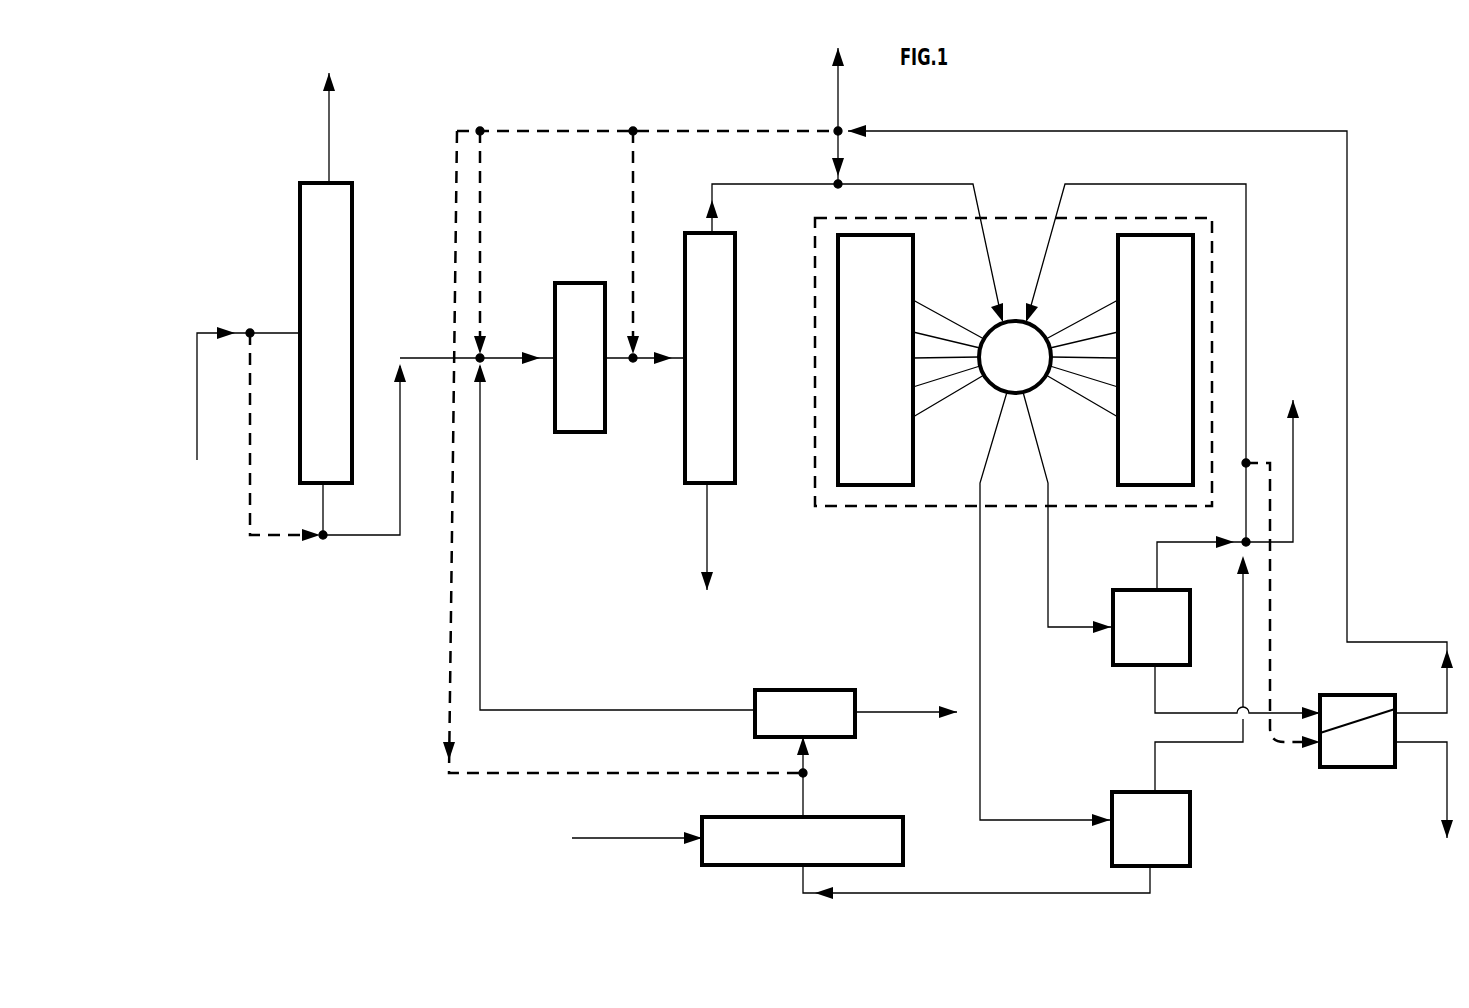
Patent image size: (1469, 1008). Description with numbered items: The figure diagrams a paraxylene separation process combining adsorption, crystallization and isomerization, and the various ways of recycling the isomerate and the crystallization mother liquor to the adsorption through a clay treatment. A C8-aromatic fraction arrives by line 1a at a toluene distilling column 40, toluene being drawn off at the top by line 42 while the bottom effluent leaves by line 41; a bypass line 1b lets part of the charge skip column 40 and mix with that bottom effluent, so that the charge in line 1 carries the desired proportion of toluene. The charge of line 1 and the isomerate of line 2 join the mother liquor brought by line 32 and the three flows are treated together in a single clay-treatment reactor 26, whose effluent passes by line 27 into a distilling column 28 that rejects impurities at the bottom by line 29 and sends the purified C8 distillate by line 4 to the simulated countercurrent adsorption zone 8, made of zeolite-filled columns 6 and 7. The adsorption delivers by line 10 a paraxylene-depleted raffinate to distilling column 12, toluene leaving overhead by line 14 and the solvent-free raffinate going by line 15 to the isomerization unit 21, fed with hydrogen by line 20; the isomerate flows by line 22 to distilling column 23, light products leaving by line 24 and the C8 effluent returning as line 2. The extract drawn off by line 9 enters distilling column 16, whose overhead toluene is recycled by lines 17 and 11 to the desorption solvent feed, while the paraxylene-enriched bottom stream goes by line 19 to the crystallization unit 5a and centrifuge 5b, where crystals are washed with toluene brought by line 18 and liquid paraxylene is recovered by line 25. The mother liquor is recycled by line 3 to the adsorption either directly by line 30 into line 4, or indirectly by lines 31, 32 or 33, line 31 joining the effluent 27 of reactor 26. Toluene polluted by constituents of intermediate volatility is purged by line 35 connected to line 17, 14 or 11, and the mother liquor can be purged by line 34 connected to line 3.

The charge line 1 is at (410, 358).
The C8-aromatic fraction source line 1a is at (200, 333).
The charge bypass line 1b is at (250, 486).
The isomerate recycle line 2 is at (480, 392).
The mother liquor recycle line 3 is at (1349, 350).
The adsorption feed line 4 is at (755, 185).
The crystallization unit 5a is at (1330, 704).
The centrifuge 5b is at (1340, 752).
The adsorption column 6 is at (886, 373).
The adsorption column 7 is at (1166, 373).
The simulated countercurrent adsorption zone 8 is at (1028, 258).
The extract line 9 is at (1048, 558).
The raffinate line 10 is at (980, 558).
The desorption solvent recycle line 11 is at (1246, 325).
The raffinate distilling column 12 is at (1165, 843).
The toluene overhead line 14 is at (1155, 752).
The solvent-free raffinate line 15 is at (965, 893).
The extract distilling column 16 is at (1163, 642).
The toluene recycle line 17 is at (1157, 552).
The washing solvent line 18 is at (1268, 746).
The paraxylene-enriched stream line 19 is at (1155, 700).
The hydrogen line 20 is at (602, 838).
The isomerization unit 21 is at (811, 855).
The isomerate line 22 is at (806, 792).
The isomerate distilling column 23 is at (819, 730).
The light overhead line 24 is at (900, 714).
The paraxylene product line 25 is at (1447, 828).
The clay-treatment reactor 26 is at (592, 372).
The clay-treatment effluent line 27 is at (633, 366).
The purification distilling column 28 is at (720, 372).
The impurities bottom line 29 is at (707, 530).
The direct mother liquor recycle line 30 is at (838, 165).
The mother liquor recycle line to reactor effluent 31 is at (633, 190).
The mother liquor line to clay treatment 32 is at (480, 190).
The indirect mother liquor recycle line 33 is at (457, 183).
The mother liquor purge line 34 is at (838, 100).
The toluene purge line 35 is at (1295, 444).
The toluene distilling column 40 is at (339, 352).
The column bottom effluent line 41 is at (323, 512).
The toluene overhead line 42 is at (329, 121).